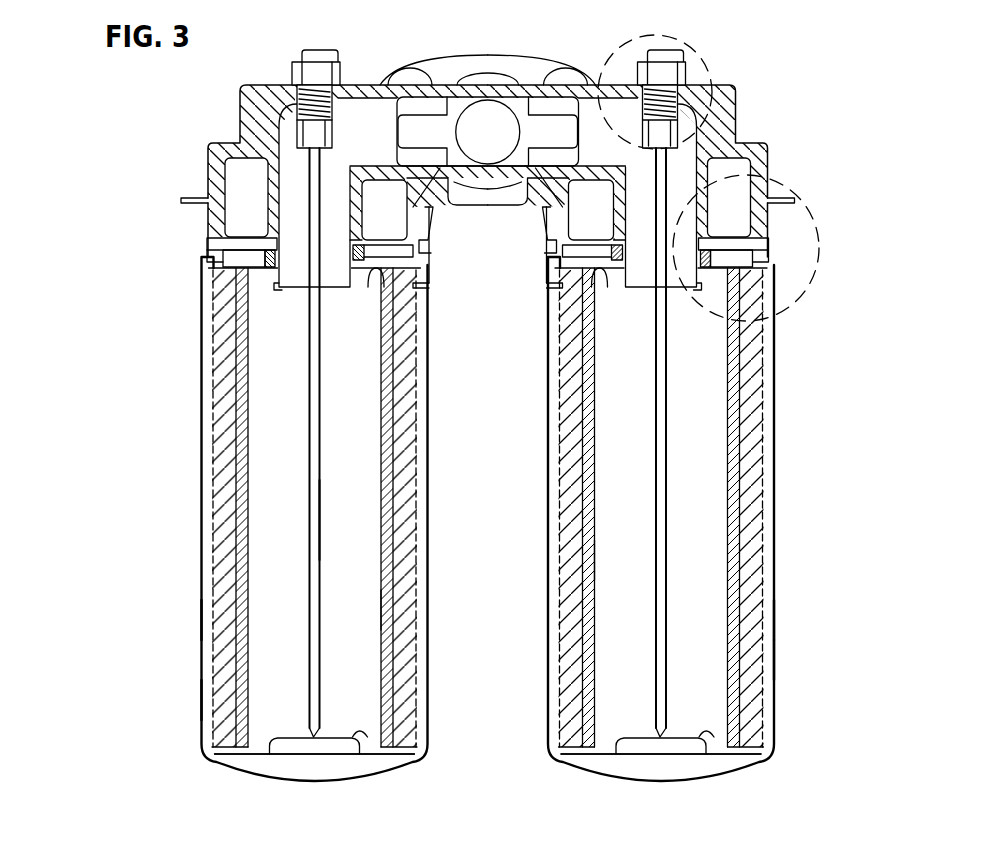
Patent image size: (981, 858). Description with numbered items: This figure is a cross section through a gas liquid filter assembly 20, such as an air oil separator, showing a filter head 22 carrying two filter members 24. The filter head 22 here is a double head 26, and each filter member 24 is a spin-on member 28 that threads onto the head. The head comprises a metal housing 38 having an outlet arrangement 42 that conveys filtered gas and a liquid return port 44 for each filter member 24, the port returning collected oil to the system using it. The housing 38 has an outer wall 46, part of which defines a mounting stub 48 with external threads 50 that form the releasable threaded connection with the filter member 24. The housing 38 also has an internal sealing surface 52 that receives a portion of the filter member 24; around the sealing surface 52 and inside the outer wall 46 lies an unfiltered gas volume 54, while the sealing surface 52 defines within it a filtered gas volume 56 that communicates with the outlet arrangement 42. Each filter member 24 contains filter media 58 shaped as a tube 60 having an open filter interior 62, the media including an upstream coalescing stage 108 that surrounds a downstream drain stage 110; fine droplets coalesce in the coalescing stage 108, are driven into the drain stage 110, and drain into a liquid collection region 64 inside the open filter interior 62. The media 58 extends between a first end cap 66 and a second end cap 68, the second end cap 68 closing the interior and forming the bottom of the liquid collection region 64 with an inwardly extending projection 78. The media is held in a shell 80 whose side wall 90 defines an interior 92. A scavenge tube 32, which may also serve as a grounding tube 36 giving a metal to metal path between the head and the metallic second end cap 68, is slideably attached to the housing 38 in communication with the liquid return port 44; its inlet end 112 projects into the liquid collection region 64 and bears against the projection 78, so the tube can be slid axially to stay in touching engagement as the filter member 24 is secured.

The gas liquid filter assembly 20 is at (88, 118).
The filter head 22 is at (380, 84).
The filter member 24 is at (171, 472).
The double head 26 is at (735, 115).
The spin-on member 28 is at (200, 588).
The scavenge tube 32 is at (308, 400).
The grounding tube 36 is at (321, 538).
The housing 38 is at (760, 137).
The outlet arrangement 42 is at (516, 132).
The liquid return port 44 is at (293, 88).
The outer wall 46 is at (211, 145).
The mounting stub 48 is at (219, 233).
The external threads 50 is at (206, 224).
The internal sealing surface 52 is at (281, 289).
The unfiltered gas volume 54 is at (412, 238).
The filtered gas volume 56 is at (486, 192).
The filter media 58 is at (428, 622).
The tube 60 is at (417, 533).
The open filter interior 62 is at (365, 622).
The liquid collection region 64 is at (344, 735).
The first end cap 66 is at (375, 272).
The second end cap 68 is at (258, 760).
The inwardly extending projection 78 is at (288, 742).
The shell 80 is at (200, 664).
The side wall 90 is at (200, 622).
The interior 92 is at (203, 698).
The upstream coalescing stage 108 is at (420, 668).
The downstream drain stage 110 is at (383, 692).
The inlet end 112 is at (318, 730).